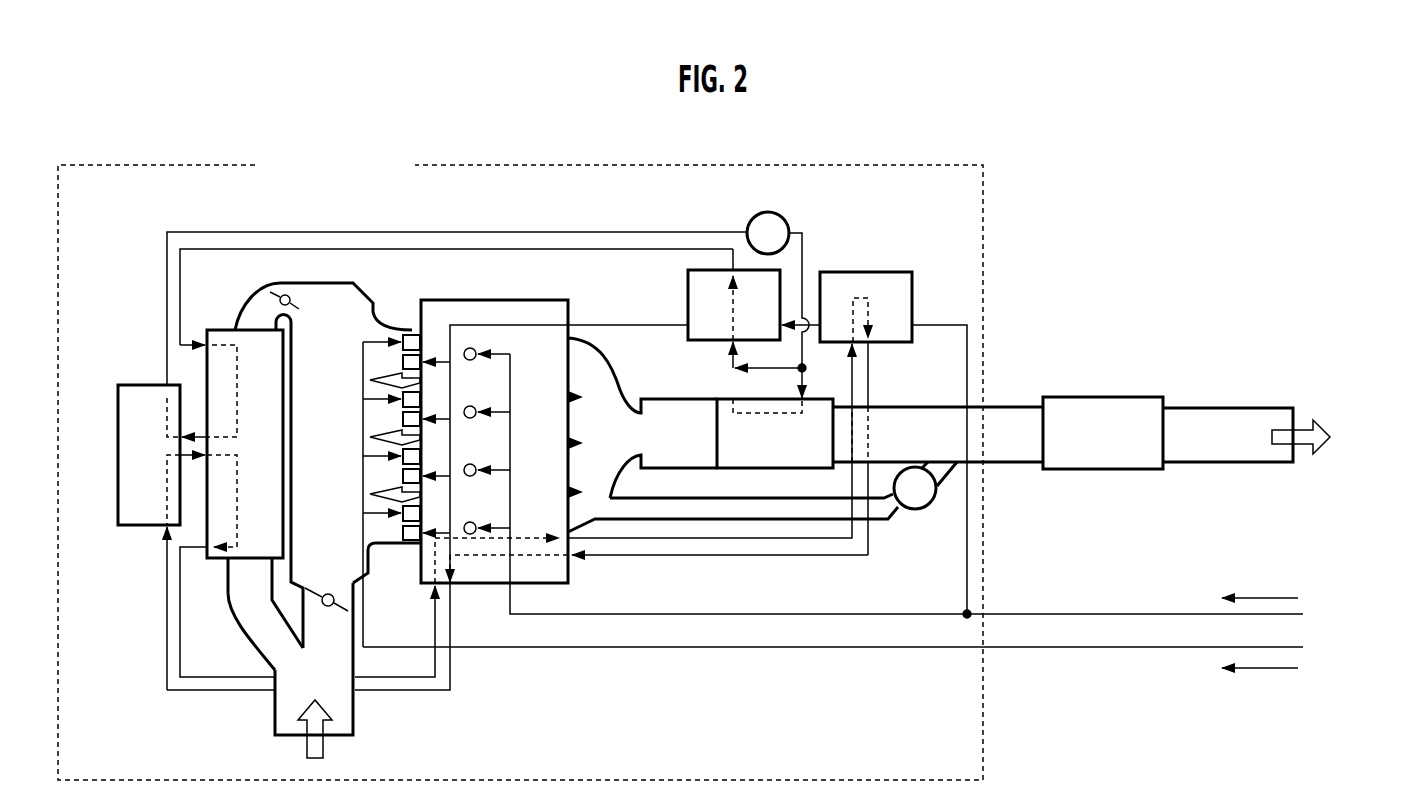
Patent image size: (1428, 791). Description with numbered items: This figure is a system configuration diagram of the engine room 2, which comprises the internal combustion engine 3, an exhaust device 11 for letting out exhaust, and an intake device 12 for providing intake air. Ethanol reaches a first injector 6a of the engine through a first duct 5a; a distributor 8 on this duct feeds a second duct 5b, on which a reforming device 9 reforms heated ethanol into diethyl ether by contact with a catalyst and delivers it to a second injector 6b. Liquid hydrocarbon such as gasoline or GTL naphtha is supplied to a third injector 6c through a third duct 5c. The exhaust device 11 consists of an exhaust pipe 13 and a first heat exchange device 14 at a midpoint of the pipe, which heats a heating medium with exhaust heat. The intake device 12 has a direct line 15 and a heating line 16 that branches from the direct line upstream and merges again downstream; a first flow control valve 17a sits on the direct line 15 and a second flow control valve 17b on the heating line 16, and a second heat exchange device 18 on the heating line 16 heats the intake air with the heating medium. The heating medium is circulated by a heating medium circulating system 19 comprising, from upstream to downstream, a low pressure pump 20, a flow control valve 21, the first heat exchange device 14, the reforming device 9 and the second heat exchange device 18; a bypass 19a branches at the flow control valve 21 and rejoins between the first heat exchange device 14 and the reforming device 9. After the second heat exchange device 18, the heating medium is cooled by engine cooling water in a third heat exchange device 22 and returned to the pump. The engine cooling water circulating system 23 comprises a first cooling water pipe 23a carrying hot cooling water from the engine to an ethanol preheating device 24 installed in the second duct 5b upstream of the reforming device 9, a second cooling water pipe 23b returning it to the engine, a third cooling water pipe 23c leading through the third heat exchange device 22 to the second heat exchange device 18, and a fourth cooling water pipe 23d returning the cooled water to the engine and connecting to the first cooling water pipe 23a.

The engine room 2 is at (862, 165).
The internal combustion engine 3 is at (495, 300).
The first duct 5a is at (748, 614).
The second duct 5b is at (648, 328).
The third duct 5c is at (772, 648).
The first injector 6a is at (473, 361).
The second injector 6b is at (410, 332).
The third injector 6c is at (402, 362).
The distributor 8 is at (963, 612).
The reforming device 9 is at (705, 342).
The exhaust device 11 is at (939, 396).
The intake device 12 is at (266, 722).
The exhaust pipe 13 is at (996, 407).
The first heat exchange device 14 is at (768, 469).
The direct line 15 is at (377, 550).
The heating line 16 is at (228, 612).
The first flow control valve 17a is at (330, 608).
The second flow control valve 17b is at (272, 289).
The second heat exchange device 18 is at (222, 328).
The heating medium circulating system 19 is at (600, 232).
The bypass 19a is at (768, 370).
The low pressure pump 20 is at (783, 218).
The flow control valve 21 is at (805, 370).
The third heat exchange device 22 is at (140, 385).
The engine cooling water circulating system 23 is at (441, 705).
The first cooling water pipe 23a is at (641, 541).
The second cooling water pipe 23b is at (870, 380).
The third cooling water pipe 23c is at (452, 678).
The fourth cooling water pipe 23d is at (432, 620).
The ethanol preheating device 24 is at (866, 272).